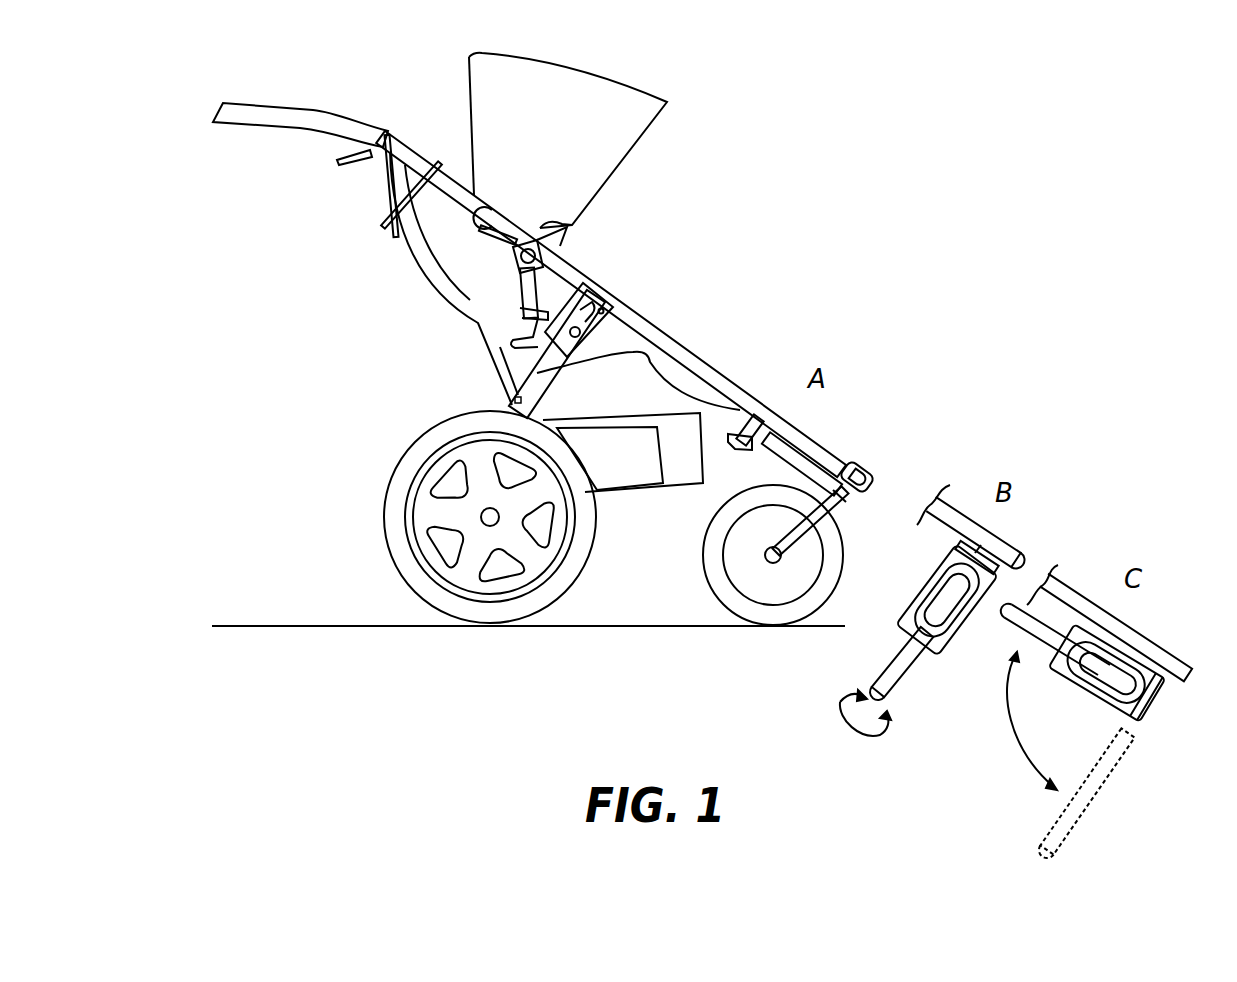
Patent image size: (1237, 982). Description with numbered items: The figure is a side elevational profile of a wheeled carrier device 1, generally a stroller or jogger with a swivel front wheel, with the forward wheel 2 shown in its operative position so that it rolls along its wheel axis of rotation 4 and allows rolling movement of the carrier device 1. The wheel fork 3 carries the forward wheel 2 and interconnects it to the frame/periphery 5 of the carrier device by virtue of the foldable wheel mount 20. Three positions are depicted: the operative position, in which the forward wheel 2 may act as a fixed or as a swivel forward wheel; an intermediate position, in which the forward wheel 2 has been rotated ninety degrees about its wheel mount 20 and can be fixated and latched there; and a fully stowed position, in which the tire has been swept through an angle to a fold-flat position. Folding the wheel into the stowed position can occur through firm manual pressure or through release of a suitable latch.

The carrier device 1 is at (681, 345).
The wheel 2 is at (718, 582).
The wheel fork 3 is at (814, 540).
The wheel axis of rotation 4 is at (772, 556).
The frame/periphery 5 is at (848, 460).
The foldable wheel mount 20 is at (873, 486).